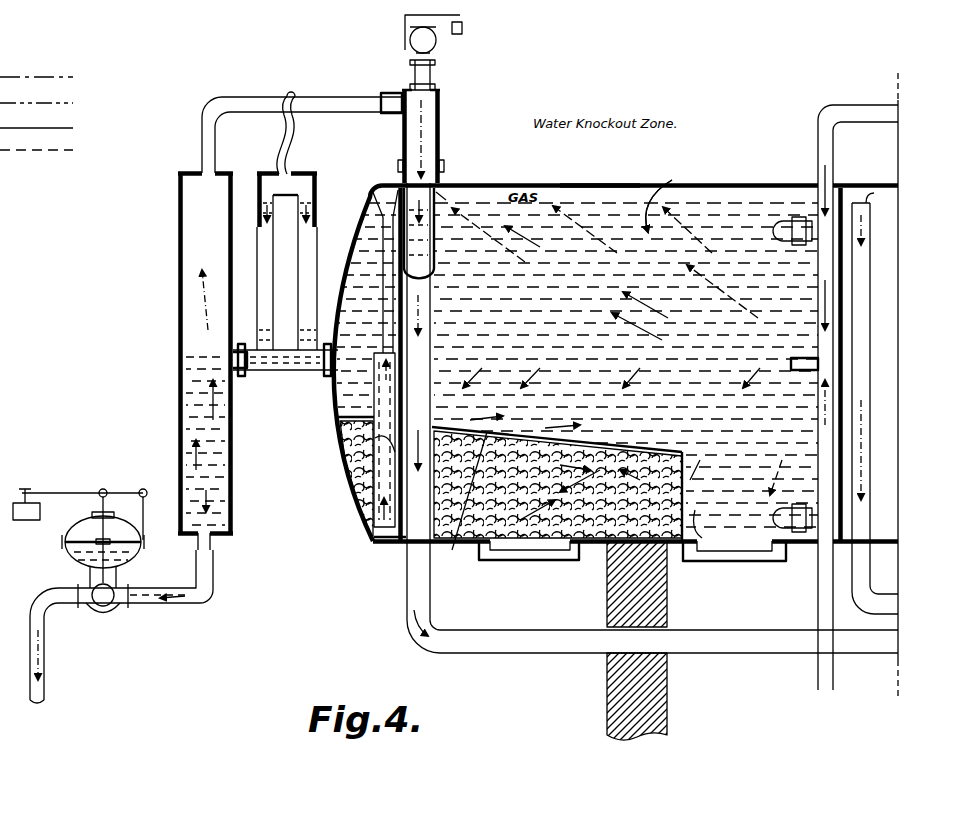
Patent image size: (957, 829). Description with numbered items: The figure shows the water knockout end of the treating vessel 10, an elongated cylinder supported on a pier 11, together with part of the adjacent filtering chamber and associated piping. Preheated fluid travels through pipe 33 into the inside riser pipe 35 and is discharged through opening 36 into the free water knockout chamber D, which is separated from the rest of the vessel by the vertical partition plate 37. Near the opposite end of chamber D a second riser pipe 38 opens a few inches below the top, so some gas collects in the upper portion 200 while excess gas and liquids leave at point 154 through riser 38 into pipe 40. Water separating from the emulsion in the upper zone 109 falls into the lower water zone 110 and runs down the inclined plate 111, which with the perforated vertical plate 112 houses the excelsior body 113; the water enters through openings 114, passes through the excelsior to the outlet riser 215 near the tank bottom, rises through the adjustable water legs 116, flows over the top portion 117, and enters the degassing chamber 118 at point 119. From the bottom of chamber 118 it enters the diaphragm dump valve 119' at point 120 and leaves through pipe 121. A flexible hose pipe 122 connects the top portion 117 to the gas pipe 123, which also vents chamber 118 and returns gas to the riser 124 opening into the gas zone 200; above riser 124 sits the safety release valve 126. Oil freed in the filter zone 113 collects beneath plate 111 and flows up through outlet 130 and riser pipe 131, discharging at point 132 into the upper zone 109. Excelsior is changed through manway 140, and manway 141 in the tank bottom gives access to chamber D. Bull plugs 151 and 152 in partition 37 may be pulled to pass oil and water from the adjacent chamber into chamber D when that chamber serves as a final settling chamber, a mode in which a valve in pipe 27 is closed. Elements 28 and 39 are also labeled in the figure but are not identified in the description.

The treating vessel 10 is at (648, 185).
The pier 11 is at (607, 701).
The pipe 27 is at (890, 606).
The outlet conduit 28 is at (870, 296).
The pipe 33 is at (900, 106).
The inside riser pipe 35 is at (823, 112).
The opening 36 is at (820, 362).
The partition plate 37 is at (846, 265).
The second riser pipe 38 is at (399, 438).
The inlet 39 is at (441, 192).
The pipe 40 is at (786, 650).
The upper zone 109 is at (567, 324).
The lower water zone 110 is at (705, 420).
The inclined plate 111 is at (533, 432).
The perforated vertical plate 112 is at (700, 548).
The excelsior body 113 is at (478, 548).
The openings 114 is at (637, 640).
The adjustable water legs 116 is at (308, 232).
The top portion of riser 117 is at (300, 172).
The degassing chamber 118 is at (178, 362).
The point 119 is at (218, 348).
The diaphragm dump valve 119' is at (135, 600).
The point 120 is at (128, 585).
The pipe 121 is at (44, 687).
The flexible hose pipe 122 is at (277, 133).
The gas pipe 123 is at (339, 97).
The riser 124 is at (434, 108).
The safety release valve 126 is at (436, 50).
The outlet 130 is at (383, 443).
The riser pipe 131 is at (386, 324).
The point 132 is at (376, 190).
The manway 140 is at (512, 565).
The manway 141 is at (745, 565).
The bull plug 151 is at (783, 222).
The bull plug 152 is at (786, 530).
The point 154 is at (436, 204).
The upper portion 200 is at (587, 185).
The outlet riser 215 is at (376, 382).
The free water knockout chamber D is at (679, 192).